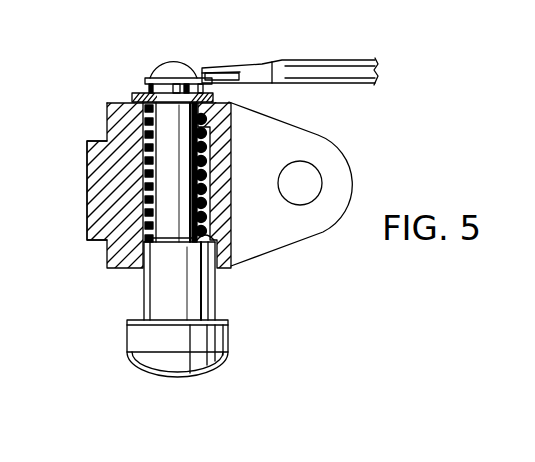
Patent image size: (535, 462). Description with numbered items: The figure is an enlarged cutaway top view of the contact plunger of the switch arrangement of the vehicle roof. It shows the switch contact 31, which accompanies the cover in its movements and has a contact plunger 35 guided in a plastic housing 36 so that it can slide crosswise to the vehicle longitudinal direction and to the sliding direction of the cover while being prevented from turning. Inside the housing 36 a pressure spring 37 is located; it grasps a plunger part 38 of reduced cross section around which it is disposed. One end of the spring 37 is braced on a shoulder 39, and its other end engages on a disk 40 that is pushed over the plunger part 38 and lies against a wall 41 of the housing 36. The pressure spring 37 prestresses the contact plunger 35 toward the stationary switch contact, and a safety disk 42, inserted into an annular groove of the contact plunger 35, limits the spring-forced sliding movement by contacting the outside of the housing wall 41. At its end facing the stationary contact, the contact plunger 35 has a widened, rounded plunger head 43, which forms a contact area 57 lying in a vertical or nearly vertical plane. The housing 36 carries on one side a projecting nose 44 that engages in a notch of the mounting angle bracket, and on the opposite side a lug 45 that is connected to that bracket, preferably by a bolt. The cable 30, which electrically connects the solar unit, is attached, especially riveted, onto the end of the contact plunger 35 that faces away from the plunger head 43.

The cable 30 is at (336, 70).
The switch contact 31 is at (88, 271).
The contact plunger 35 is at (198, 303).
The plastic housing 36 is at (108, 118).
The pressure spring 37 is at (145, 172).
The plunger part 38 is at (176, 179).
The shoulder 39 is at (210, 237).
The disk 40 is at (228, 102).
The housing wall 41 is at (205, 102).
The safety disk 42 is at (147, 97).
The plunger head 43 is at (229, 366).
The projecting nose 44 is at (90, 228).
The lug 45 is at (333, 157).
The contact area 57 is at (173, 378).